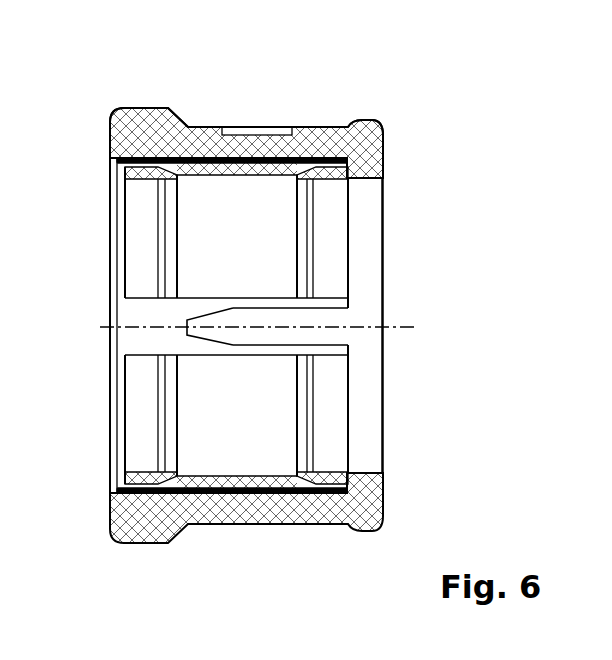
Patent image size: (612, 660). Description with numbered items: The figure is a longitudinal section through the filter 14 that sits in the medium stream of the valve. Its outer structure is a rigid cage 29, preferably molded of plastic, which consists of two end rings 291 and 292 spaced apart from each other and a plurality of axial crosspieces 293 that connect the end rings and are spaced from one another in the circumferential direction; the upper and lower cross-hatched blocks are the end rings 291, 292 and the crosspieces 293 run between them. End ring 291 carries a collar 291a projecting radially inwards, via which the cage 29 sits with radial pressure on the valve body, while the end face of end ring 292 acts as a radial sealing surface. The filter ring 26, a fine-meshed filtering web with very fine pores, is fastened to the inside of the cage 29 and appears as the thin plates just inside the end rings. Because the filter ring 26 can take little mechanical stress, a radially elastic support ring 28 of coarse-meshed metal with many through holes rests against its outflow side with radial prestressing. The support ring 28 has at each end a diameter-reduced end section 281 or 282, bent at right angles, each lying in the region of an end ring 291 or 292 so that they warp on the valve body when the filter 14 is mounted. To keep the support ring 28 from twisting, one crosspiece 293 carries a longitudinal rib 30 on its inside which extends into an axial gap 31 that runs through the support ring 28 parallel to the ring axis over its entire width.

The filter 14 is at (104, 78).
The filter ring 26 is at (157, 160).
The support ring 28 is at (218, 178).
The cage 29 is at (214, 124).
The longitudinal rib 30 is at (360, 313).
The axial gap 31 is at (145, 313).
The end section 281 is at (330, 177).
The end section 282 is at (138, 174).
The end ring 291 is at (370, 142).
The collar 291a is at (368, 168).
The end ring 292 is at (133, 135).
The axial crosspieces 293 is at (318, 135).